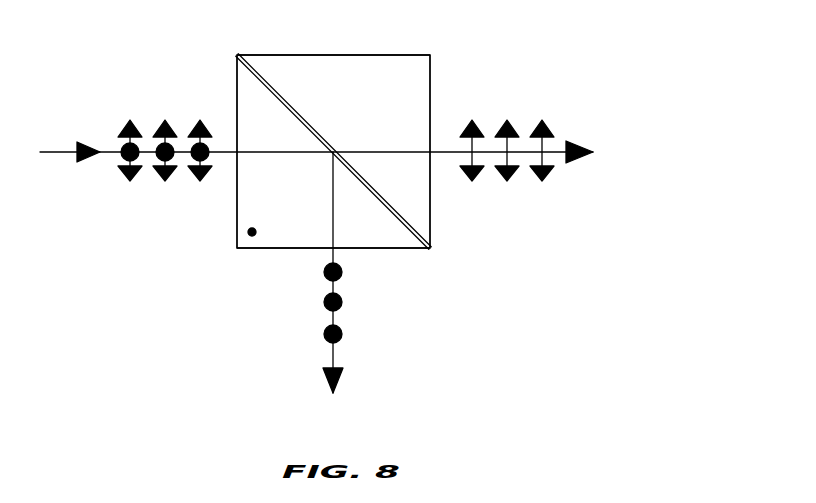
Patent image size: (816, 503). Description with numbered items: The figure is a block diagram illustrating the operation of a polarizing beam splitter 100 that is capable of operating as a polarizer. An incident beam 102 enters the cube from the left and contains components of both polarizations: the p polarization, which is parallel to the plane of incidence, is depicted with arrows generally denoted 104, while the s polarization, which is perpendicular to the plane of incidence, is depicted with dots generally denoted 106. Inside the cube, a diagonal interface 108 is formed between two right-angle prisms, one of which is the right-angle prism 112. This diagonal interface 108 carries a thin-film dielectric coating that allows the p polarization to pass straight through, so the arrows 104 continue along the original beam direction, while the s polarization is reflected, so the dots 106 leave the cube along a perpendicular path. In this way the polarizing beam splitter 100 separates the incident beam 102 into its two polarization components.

The polarizing beam splitter 100 is at (237, 220).
The incident beam 102 is at (62, 150).
The p polarization arrows 104 is at (130, 135).
The s polarization dots 106 is at (122, 155).
The diagonal interface 108 is at (397, 218).
The right-angle prism 112 is at (380, 53).